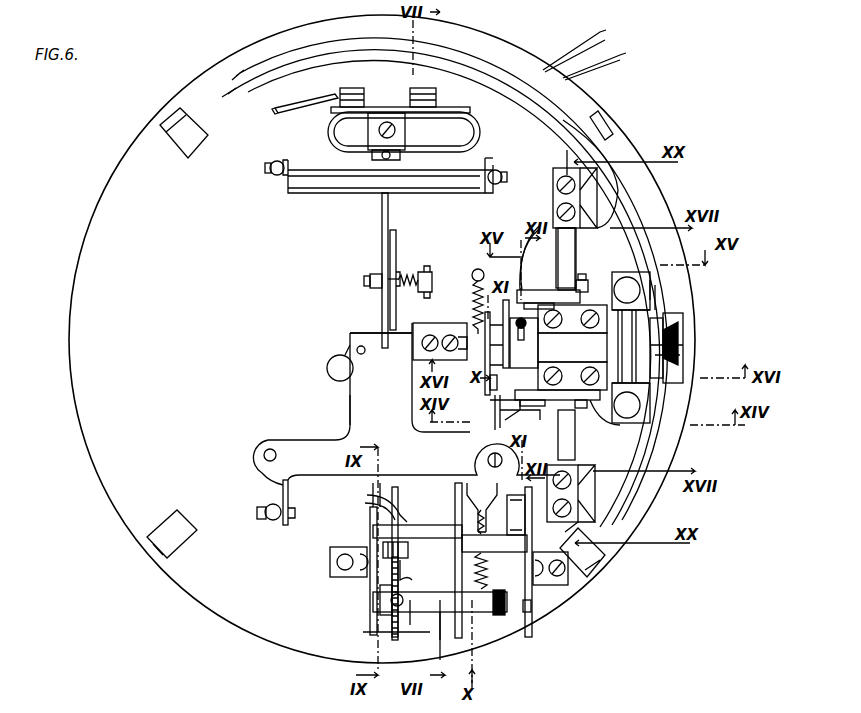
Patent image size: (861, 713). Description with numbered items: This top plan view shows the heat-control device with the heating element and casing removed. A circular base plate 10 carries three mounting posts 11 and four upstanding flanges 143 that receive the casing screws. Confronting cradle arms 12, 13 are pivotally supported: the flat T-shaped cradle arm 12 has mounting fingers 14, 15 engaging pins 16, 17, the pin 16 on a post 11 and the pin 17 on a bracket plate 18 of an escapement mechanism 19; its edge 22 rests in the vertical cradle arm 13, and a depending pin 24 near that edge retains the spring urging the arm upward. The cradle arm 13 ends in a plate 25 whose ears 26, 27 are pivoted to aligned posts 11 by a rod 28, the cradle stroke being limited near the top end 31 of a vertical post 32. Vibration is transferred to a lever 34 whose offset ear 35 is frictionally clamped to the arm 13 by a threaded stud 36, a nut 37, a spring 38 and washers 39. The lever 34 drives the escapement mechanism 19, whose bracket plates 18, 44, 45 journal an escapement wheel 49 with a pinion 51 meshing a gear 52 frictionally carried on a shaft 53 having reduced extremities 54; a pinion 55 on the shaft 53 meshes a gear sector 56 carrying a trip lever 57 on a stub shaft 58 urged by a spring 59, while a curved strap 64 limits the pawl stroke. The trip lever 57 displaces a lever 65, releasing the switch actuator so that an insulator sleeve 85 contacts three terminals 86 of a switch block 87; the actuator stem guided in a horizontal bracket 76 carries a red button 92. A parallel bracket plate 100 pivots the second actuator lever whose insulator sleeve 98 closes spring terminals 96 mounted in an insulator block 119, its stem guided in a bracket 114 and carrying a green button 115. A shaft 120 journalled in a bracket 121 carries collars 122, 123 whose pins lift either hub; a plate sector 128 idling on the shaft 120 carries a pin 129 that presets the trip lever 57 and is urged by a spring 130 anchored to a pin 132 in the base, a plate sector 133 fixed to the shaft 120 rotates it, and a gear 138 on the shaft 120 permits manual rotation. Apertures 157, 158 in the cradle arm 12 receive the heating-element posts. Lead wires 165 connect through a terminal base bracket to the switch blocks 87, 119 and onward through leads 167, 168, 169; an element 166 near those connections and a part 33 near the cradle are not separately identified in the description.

The circular base plate 10 is at (100, 210).
The mounting posts 11 is at (272, 160).
The cradle arm 12 is at (368, 414).
The cradle arm 13 is at (380, 207).
The mounting finger 14 is at (290, 492).
The mounting finger 15 is at (468, 497).
The pin 16 is at (296, 515).
The pin 17 is at (470, 518).
The bracket plate 18 is at (460, 560).
The escapement mechanism 19 is at (370, 580).
The edge of cradle arm 22 is at (358, 332).
The depending pin 24 is at (358, 346).
The plate 25 is at (472, 188).
The ear 26 is at (294, 160).
The ear 27 is at (500, 160).
The rod 28 is at (320, 182).
The top end of vertical post 31 is at (338, 360).
The vertical post 32 is at (327, 363).
The plate edge 33 is at (348, 401).
The lever 34 is at (400, 330).
The offset ear 35 is at (398, 275).
The threaded stud 36 is at (423, 266).
The threaded fastener nut 37 is at (370, 275).
The spring 38 is at (418, 292).
The washers 39 is at (405, 268).
The outside bracket plate 44 is at (370, 612).
The outside bracket plate 45 is at (535, 600).
The escapement wheel 49 is at (410, 598).
The pinion 51 is at (383, 548).
The gear 52 is at (398, 638).
The elongated shaft 53 is at (440, 640).
The reduced extremities 54 is at (370, 600).
The pinion 55 is at (500, 615).
The gear sector 56 is at (510, 552).
The trip lever 57 is at (509, 415).
The stub shaft 58 is at (525, 520).
The spring 59 is at (470, 612).
The curved strap 64 is at (370, 497).
The lever 65 is at (525, 418).
The horizontal bracket 76 is at (638, 397).
The insulator sleeve 85 is at (568, 390).
The electric terminals 86 is at (575, 440).
The switch block 87 is at (580, 528).
The red button 92 is at (625, 430).
The electric spring terminals 96 is at (578, 255).
The insulator sleeve 98 is at (584, 278).
The bracket plate 100 is at (518, 292).
The horizontally offset bracket 114 is at (640, 287).
The green plastic button 115 is at (652, 295).
The insulator block 119 is at (556, 168).
The shaft 120 is at (588, 348).
The bracket 121 is at (420, 360).
The collar 122 is at (668, 325).
The collar 123 is at (680, 340).
The plate sector 128 is at (490, 360).
The pin 129 is at (488, 403).
The spring 130 is at (474, 300).
The pin 132 is at (474, 270).
The plate sector 133 is at (536, 260).
The gear 138 is at (683, 352).
The upstanding flanges 143 is at (160, 122).
The aperture 157 is at (262, 450).
The aperture 158 is at (488, 462).
The lead wires 165 is at (595, 50).
The terminal 166 is at (398, 106).
The lead 167 is at (490, 68).
The lead 168 is at (300, 100).
The lead 169 is at (290, 62).